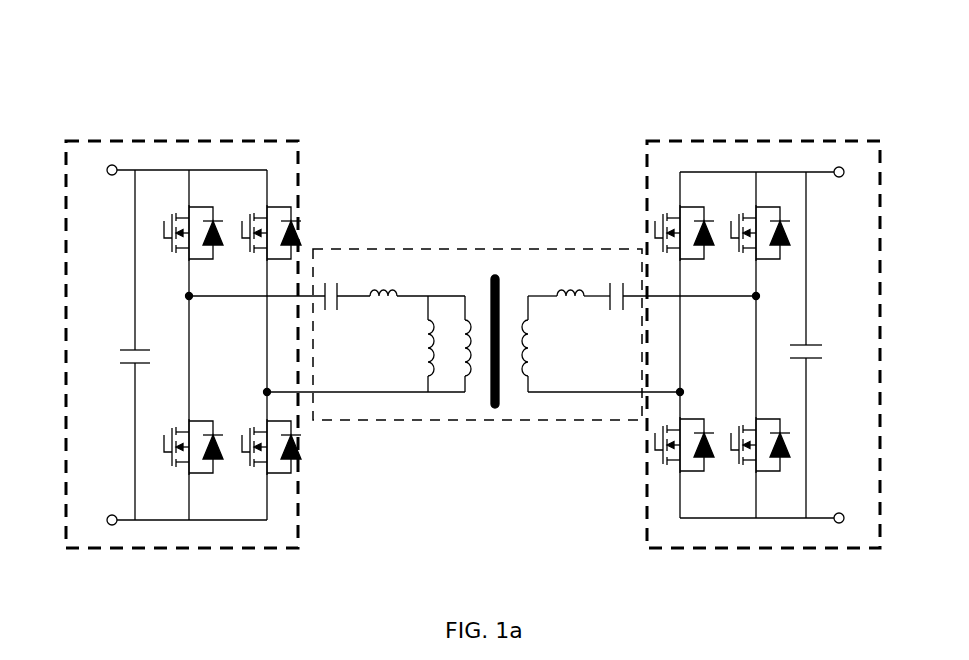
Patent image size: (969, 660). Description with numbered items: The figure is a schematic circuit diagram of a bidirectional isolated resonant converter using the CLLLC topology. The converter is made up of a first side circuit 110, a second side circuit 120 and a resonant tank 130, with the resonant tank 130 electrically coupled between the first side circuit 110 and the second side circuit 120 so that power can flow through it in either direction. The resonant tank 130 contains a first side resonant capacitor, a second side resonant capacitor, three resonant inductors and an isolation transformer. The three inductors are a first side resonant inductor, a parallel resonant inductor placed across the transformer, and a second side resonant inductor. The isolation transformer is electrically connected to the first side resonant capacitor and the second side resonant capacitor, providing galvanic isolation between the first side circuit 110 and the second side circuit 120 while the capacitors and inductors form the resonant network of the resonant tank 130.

The first side circuit 110 is at (227, 140).
The second side circuit 120 is at (785, 141).
The resonant tank 130 is at (504, 249).